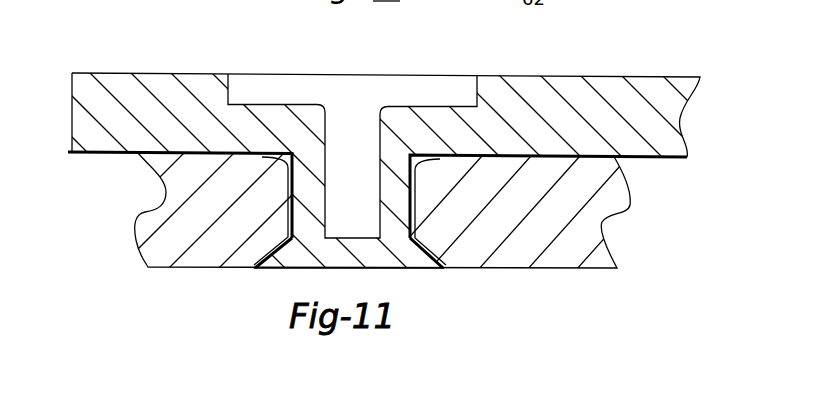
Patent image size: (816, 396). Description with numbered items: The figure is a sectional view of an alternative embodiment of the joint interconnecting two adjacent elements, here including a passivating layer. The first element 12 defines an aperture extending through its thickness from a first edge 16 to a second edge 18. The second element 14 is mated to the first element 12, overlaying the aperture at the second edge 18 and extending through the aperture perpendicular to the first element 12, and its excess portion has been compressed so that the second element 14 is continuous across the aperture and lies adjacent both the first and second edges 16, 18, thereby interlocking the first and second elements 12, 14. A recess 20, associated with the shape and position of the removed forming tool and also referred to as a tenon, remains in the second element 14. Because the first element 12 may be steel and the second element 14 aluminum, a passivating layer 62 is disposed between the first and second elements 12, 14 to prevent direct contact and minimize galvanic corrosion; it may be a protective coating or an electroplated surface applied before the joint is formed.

The first element 12 is at (575, 210).
The second element 14 is at (655, 88).
The first edge 16 is at (270, 162).
The second edge 18 is at (420, 253).
The recess 20 is at (357, 100).
The passivating layer 62 is at (668, 160).